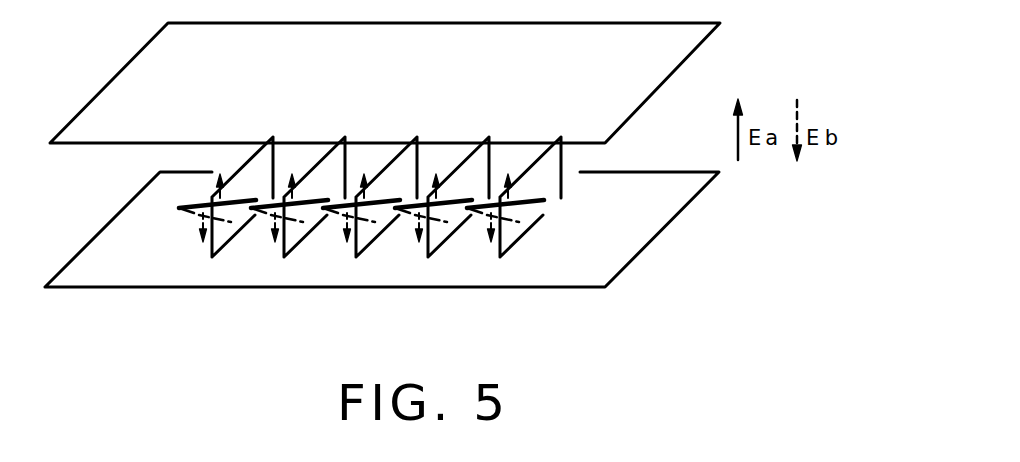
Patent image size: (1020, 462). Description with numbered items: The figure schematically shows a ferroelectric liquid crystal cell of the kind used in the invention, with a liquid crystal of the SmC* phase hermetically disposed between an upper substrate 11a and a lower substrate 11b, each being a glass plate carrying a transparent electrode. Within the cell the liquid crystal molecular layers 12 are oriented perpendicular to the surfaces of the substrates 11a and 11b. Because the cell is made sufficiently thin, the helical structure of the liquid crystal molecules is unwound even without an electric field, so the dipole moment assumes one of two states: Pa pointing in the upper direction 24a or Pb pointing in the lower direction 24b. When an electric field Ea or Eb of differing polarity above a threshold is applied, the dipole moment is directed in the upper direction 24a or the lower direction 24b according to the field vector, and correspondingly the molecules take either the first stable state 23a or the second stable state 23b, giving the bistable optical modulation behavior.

The substrate 11a is at (662, 77).
The substrate 11b is at (665, 217).
The liquid crystal molecular layers 12 is at (560, 162).
The first stable state 23a is at (242, 199).
The second stable state 23b is at (222, 220).
The upper direction 24a is at (218, 184).
The lower direction 24b is at (200, 214).